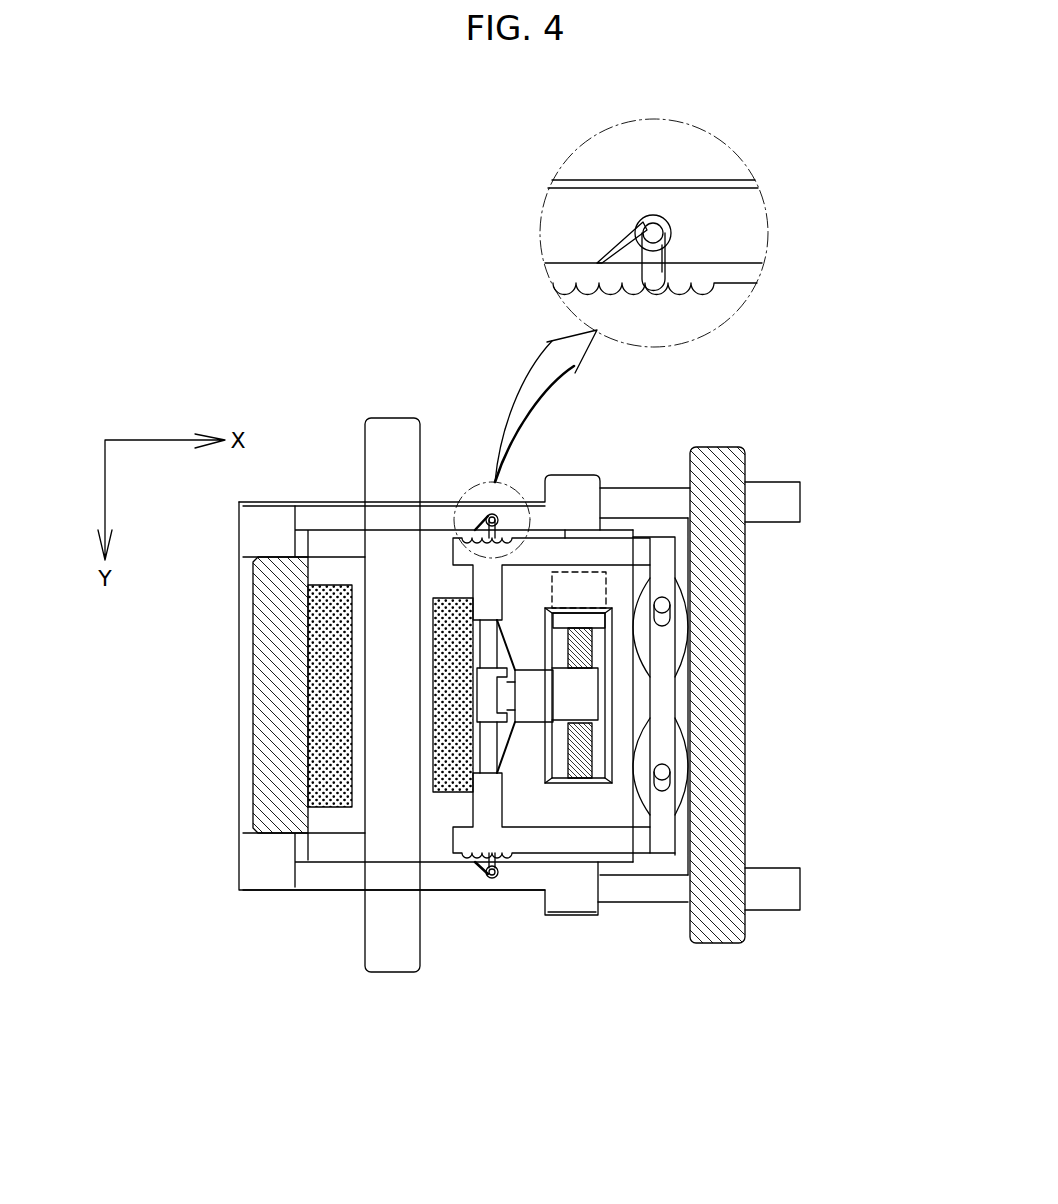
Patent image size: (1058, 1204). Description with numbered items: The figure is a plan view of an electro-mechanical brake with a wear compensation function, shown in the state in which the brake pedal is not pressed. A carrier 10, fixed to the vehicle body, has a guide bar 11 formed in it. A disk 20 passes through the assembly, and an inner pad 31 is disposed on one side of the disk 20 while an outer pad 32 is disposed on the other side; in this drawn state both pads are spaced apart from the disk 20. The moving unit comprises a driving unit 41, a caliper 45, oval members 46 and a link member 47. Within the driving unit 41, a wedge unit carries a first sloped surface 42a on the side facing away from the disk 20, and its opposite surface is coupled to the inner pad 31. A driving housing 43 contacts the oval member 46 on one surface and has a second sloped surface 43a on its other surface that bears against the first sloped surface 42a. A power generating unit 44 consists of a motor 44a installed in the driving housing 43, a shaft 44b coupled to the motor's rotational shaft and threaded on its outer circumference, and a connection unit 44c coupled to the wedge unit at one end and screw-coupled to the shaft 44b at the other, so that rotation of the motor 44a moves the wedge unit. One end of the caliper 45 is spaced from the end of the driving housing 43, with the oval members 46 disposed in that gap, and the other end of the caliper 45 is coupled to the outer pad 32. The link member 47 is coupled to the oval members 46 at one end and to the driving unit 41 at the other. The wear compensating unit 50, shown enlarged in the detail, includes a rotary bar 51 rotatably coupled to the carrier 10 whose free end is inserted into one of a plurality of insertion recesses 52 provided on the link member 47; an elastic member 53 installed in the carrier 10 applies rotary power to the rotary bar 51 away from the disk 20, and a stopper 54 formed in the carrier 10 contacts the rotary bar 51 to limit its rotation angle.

The carrier 10 is at (567, 893).
The guide bar 11 is at (647, 890).
The disk 20 is at (383, 452).
The inner pad 31 is at (447, 770).
The outer pad 32 is at (330, 778).
The driving unit 41 is at (617, 677).
The first sloped surface 42a is at (490, 645).
The driving housing 43 is at (594, 918).
The second sloped surface 43a is at (515, 667).
The power generating unit 44 is at (679, 597).
The motor 44a is at (595, 570).
The shaft 44b is at (588, 647).
The connection unit 44c is at (580, 700).
The caliper 45 is at (273, 748).
The oval members 46 is at (682, 612).
The link member 47 is at (662, 552).
The wear compensating unit 50 is at (668, 235).
The rotary bar 51 is at (652, 252).
The insertion recess 52 is at (653, 292).
The elastic member 53 is at (608, 248).
The stopper 54 is at (668, 257).